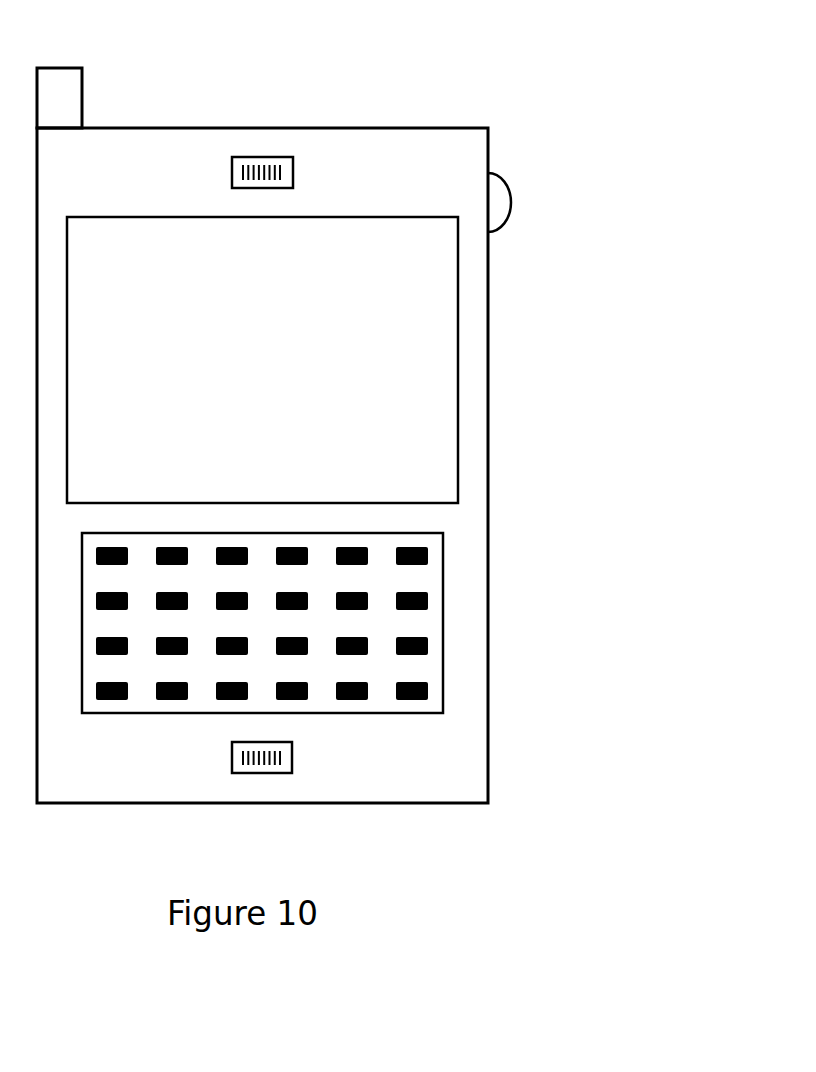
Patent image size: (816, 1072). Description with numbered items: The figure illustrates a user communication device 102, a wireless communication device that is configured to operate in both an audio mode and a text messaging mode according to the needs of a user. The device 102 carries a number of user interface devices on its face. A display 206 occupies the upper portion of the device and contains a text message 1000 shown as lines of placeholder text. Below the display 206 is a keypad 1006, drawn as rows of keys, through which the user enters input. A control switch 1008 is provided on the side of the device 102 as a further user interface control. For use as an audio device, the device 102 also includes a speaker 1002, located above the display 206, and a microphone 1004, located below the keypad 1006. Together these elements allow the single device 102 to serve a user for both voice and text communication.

The user communication device 102 is at (440, 44).
The display 206 is at (434, 494).
The text message 1000 is at (200, 298).
The speaker 1002 is at (304, 160).
The microphone 1004 is at (312, 747).
The keypad 1006 is at (150, 737).
The control switch 1008 is at (518, 175).